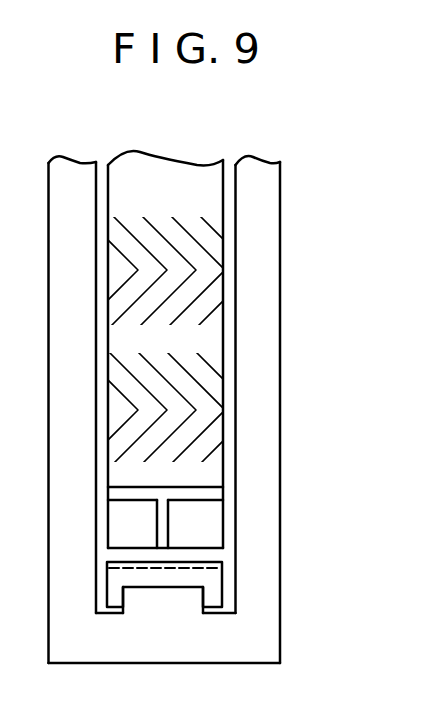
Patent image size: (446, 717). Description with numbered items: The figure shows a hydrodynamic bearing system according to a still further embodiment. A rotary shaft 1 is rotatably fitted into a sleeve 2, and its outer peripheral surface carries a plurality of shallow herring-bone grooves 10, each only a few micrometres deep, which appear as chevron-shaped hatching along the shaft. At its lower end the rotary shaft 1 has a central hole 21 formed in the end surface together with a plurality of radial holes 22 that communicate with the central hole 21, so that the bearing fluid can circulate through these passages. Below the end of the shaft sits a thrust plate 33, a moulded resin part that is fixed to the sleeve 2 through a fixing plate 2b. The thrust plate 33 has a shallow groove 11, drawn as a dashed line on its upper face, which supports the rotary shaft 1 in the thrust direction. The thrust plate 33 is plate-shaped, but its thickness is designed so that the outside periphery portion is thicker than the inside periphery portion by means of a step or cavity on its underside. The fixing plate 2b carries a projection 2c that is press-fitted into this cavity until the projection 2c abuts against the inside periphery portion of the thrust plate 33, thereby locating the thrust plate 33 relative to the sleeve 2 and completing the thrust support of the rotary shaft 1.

The rotary shaft 1 is at (200, 190).
The sleeve 2 is at (252, 290).
The fixing plate 2b is at (217, 647).
The projection 2c is at (173, 605).
The herring-bone grooves 10 is at (188, 372).
The shallow groove 11 is at (190, 568).
The central hole 21 is at (162, 521).
The radial holes 22 is at (208, 492).
The thrust plate 33 is at (207, 580).